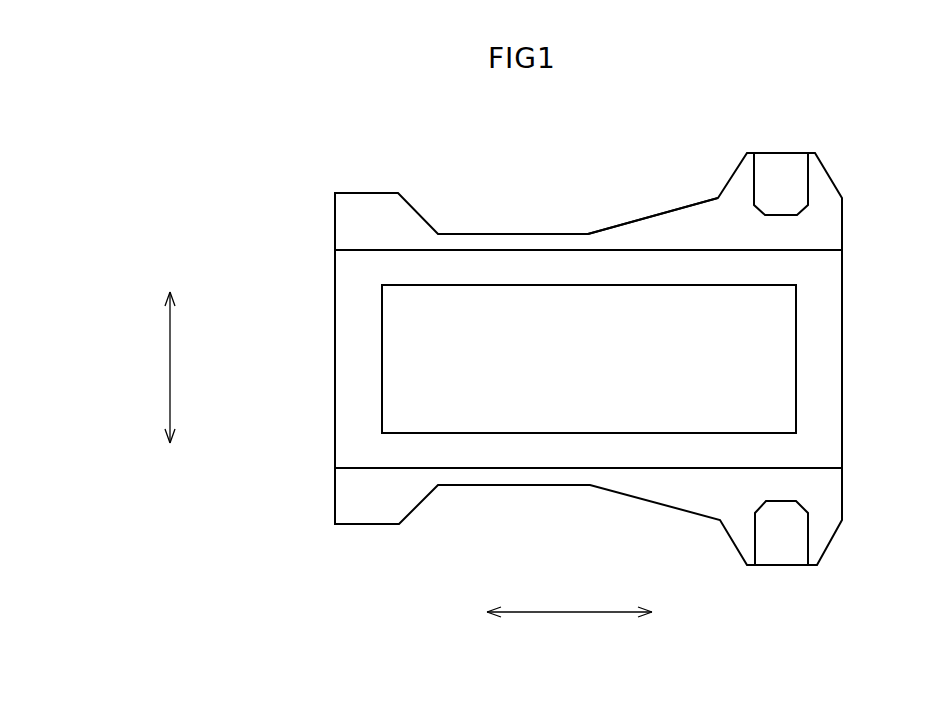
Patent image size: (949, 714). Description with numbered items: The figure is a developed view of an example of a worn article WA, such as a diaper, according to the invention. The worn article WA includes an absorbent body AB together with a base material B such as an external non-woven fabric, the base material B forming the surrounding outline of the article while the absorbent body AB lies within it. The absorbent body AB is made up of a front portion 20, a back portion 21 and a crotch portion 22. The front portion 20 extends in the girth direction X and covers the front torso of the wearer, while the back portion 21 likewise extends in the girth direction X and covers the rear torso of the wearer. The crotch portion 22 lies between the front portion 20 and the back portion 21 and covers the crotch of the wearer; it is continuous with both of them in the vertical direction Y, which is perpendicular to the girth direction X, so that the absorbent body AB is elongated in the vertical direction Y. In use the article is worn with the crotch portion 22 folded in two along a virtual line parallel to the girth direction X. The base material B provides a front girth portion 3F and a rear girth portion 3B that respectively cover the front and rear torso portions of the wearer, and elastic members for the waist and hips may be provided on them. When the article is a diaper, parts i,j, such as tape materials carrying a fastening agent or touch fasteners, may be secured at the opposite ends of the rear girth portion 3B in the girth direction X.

The worn article WA is at (881, 139).
The front girth portion 3F is at (350, 223).
The rear girth portion 3B is at (827, 223).
The base material B is at (658, 228).
The parts i,j is at (783, 168).
The absorbent body AB is at (613, 367).
The front portion 20 is at (397, 357).
The back portion 21 is at (788, 364).
The crotch portion 22 is at (566, 412).
The girth direction X is at (159, 367).
The vertical direction Y is at (569, 599).